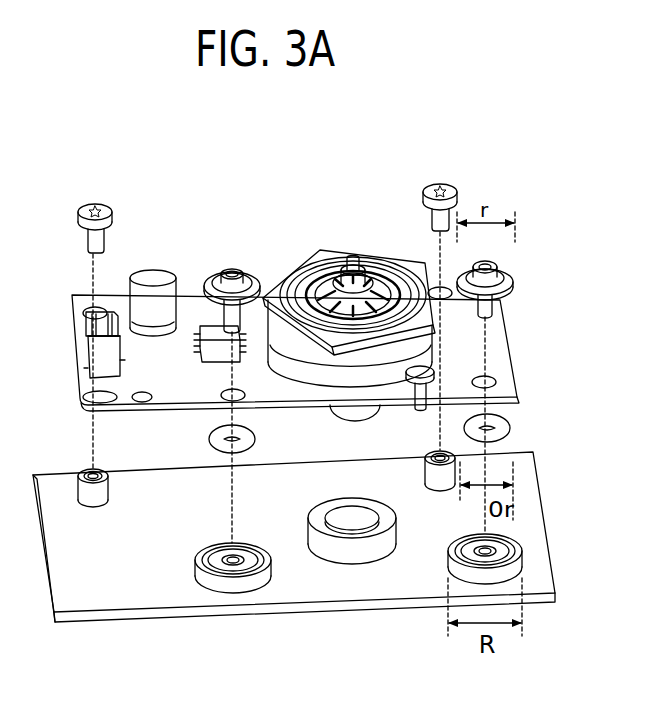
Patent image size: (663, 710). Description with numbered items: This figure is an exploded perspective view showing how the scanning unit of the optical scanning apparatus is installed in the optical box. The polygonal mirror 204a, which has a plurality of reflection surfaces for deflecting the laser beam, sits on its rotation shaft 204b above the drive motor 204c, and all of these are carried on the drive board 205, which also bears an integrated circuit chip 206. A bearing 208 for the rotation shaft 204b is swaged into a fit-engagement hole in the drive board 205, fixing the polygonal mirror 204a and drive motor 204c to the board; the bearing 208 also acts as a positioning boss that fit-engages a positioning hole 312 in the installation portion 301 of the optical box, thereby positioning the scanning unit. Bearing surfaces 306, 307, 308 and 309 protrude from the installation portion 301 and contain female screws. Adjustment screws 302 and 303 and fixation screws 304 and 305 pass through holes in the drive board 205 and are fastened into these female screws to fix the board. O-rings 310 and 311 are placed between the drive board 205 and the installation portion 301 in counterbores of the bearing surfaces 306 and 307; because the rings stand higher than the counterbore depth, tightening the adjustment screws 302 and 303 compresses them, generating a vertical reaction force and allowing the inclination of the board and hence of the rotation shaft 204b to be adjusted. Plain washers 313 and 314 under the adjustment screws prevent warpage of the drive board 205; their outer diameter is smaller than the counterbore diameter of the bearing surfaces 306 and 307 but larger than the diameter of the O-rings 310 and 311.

The polygonal mirror 204a is at (317, 253).
The rotation shaft 204b is at (350, 258).
The drive motor 204c is at (313, 370).
The drive board 205 is at (503, 372).
The integrated circuit (IC) chip 206 is at (193, 345).
The bearing 208 is at (365, 412).
The installation portion 301 is at (537, 492).
The adjustment screw 302 is at (228, 273).
The adjustment screw 303 is at (492, 263).
The fixation screw 304 is at (93, 205).
The fixation screw 305 is at (440, 185).
The bearing surface 306 is at (228, 588).
The bearing surface 307 is at (525, 562).
The bearing surface 308 is at (77, 490).
The bearing surface 309 is at (440, 487).
The O-ring 310 is at (213, 443).
The O-ring 311 is at (510, 428).
The positioning hole 312 is at (353, 555).
The plain washer 313 is at (256, 273).
The plain washer 314 is at (513, 278).